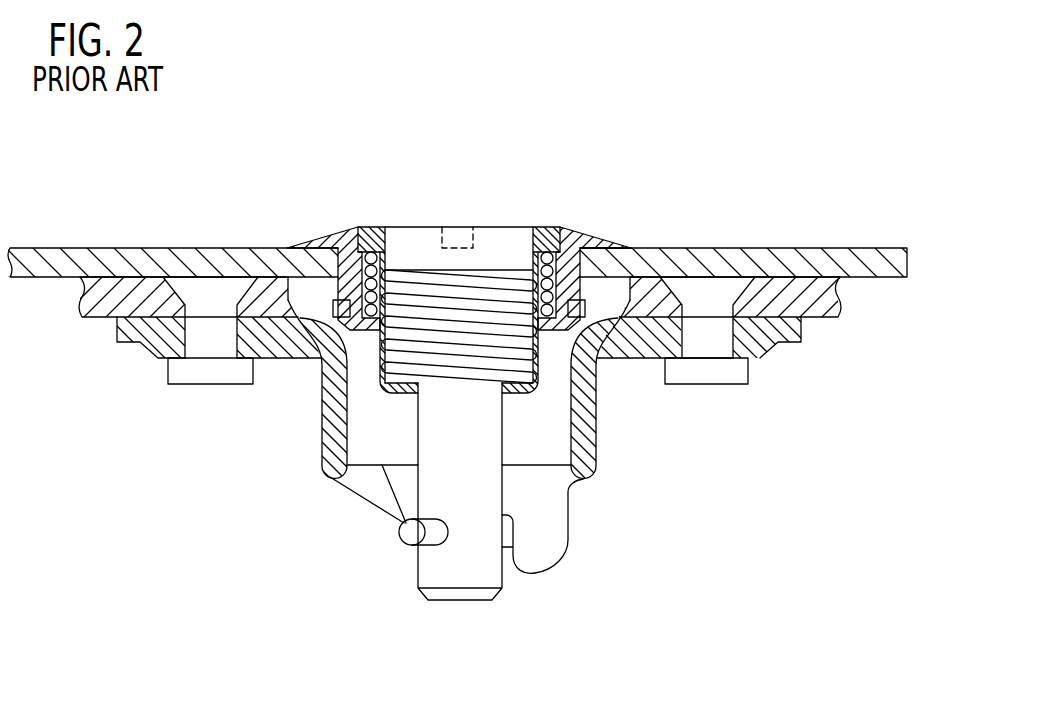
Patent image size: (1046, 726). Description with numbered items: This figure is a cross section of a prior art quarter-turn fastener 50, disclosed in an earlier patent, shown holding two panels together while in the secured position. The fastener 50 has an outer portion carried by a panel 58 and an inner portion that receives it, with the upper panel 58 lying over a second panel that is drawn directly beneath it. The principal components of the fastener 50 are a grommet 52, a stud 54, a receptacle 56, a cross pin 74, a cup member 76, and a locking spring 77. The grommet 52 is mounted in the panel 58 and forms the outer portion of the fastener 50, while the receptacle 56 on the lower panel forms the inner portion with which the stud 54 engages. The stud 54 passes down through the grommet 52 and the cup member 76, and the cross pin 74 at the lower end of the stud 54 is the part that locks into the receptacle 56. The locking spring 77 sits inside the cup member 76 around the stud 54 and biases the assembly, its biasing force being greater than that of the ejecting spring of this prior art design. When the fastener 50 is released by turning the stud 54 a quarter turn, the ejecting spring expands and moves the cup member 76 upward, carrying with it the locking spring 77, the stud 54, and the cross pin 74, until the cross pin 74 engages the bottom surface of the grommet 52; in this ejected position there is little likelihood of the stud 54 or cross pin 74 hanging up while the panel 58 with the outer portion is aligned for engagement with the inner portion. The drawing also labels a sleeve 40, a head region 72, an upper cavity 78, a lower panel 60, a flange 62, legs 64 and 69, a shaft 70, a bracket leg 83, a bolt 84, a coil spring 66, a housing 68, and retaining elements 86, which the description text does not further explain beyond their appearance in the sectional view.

The sleeve 40 is at (372, 227).
The fastener 50 is at (184, 188).
The grommet 52 is at (598, 218).
The stud 54 is at (468, 622).
The receptacle 56 is at (306, 456).
The panel 58 is at (110, 247).
The second panel 60 is at (97, 317).
The flange 62 is at (580, 267).
The leg 64 is at (310, 362).
The coil spring 66 is at (333, 300).
The housing 68 is at (320, 244).
The leg 69 is at (586, 312).
The shaft 70 is at (426, 567).
The head 72 is at (428, 227).
The cross pin 74 is at (410, 531).
The cup member 76 is at (373, 370).
The locking spring 77 is at (480, 350).
The cavity 78 is at (540, 227).
The bracket leg 83 is at (598, 437).
The bolt 84 is at (767, 345).
The retaining element 86 is at (373, 508).